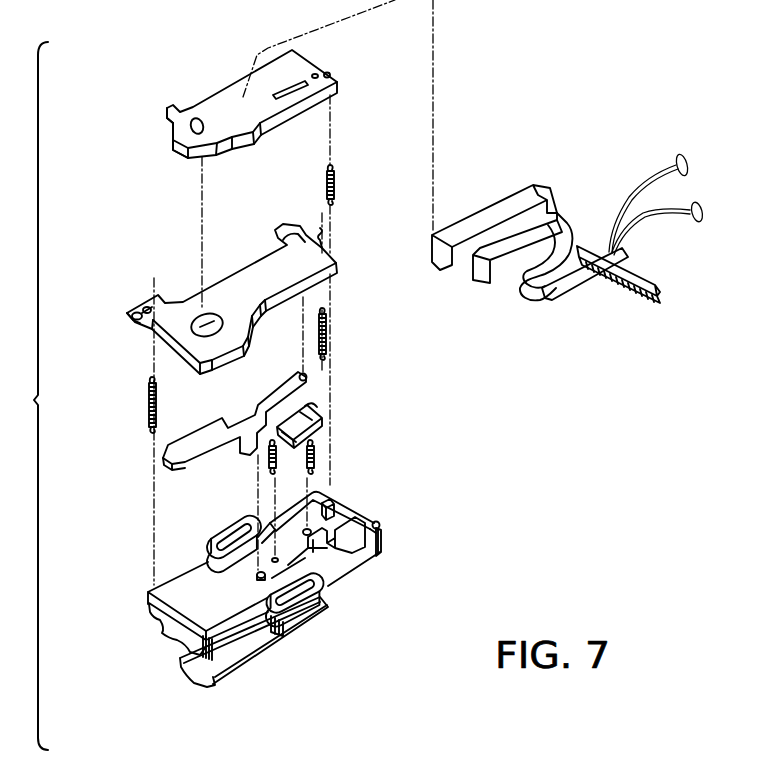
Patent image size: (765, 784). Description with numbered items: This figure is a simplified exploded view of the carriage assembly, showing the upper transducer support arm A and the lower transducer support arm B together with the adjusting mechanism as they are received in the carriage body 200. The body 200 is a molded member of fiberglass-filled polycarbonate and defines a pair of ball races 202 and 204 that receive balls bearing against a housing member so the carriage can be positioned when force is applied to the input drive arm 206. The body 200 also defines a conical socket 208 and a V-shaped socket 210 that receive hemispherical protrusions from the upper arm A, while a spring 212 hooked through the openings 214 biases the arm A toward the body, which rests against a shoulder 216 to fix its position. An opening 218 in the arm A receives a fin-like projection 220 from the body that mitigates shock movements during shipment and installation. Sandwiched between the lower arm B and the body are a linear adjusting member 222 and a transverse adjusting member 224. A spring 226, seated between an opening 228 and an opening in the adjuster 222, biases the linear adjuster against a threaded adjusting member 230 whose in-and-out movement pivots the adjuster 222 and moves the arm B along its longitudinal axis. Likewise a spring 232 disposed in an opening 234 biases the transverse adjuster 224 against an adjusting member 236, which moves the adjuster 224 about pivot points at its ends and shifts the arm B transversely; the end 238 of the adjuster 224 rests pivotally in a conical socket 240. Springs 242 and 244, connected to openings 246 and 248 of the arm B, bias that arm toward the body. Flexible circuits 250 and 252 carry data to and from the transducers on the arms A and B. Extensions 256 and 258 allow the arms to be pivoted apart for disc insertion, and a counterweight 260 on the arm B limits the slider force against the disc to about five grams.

The carriage body 200 is at (152, 630).
The ball race 202 is at (212, 558).
The ball race 204 is at (263, 582).
The input drive arm 206 is at (185, 678).
The conical depression or socket 208 is at (382, 518).
The "V" shaped socket 210 is at (325, 497).
The spring 212 is at (335, 182).
The openings 214 is at (327, 73).
The shoulder 216 is at (337, 540).
The opening 218 is at (290, 83).
The fin-like projection 220 is at (378, 553).
The linear adjusting member 222 is at (307, 432).
The transverse adjusting member 224 is at (163, 458).
The spring 226 is at (313, 457).
The opening 228 is at (305, 530).
The adjusting member 230 is at (320, 584).
The spring 232 is at (270, 456).
The opening 234 is at (272, 627).
The adjusting member 236 is at (258, 578).
The end of transverse adjuster 238 is at (306, 379).
The conical socket 240 is at (322, 412).
The spring 242 is at (328, 333).
The spring 244 is at (150, 402).
The opening 246 is at (327, 229).
The opening 248 is at (130, 320).
The flexible circuit 250 is at (519, 185).
The flexible circuit 252 is at (560, 294).
The extension 256 is at (170, 107).
The extension 258 is at (285, 230).
The counterweight 260 is at (148, 305).
The upper transducer support arm A is at (340, 87).
The lower transducer support arm B is at (340, 272).